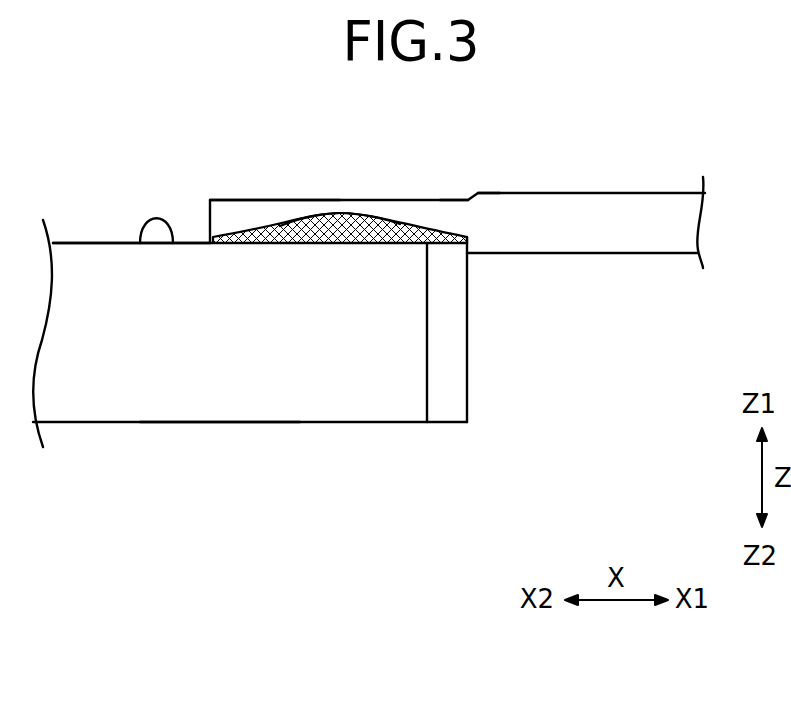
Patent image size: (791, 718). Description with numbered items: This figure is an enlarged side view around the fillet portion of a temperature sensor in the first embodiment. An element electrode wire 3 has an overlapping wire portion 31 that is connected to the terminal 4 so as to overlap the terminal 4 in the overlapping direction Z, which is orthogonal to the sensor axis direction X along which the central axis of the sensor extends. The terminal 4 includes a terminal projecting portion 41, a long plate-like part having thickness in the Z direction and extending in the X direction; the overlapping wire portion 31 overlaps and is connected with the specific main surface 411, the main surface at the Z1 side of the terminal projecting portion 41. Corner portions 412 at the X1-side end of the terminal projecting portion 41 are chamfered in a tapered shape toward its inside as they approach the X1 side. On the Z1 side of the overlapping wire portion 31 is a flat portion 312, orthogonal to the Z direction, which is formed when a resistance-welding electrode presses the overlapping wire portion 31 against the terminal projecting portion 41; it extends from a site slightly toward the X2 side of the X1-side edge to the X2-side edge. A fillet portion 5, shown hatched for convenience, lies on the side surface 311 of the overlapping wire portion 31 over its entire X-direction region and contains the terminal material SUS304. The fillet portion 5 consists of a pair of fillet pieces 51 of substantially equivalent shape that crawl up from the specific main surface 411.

The element electrode wire 3 is at (640, 213).
The overlapping wire portion 31 is at (223, 215).
The side surface 311 is at (271, 220).
The flat portion 312 is at (385, 197).
The terminal 4 is at (85, 397).
The terminal projecting portion 41 is at (215, 397).
The specific main surface 411 is at (140, 243).
The corner portion 412 is at (451, 402).
The fillet portion 5 is at (384, 232).
The fillet piece 51 is at (330, 217).